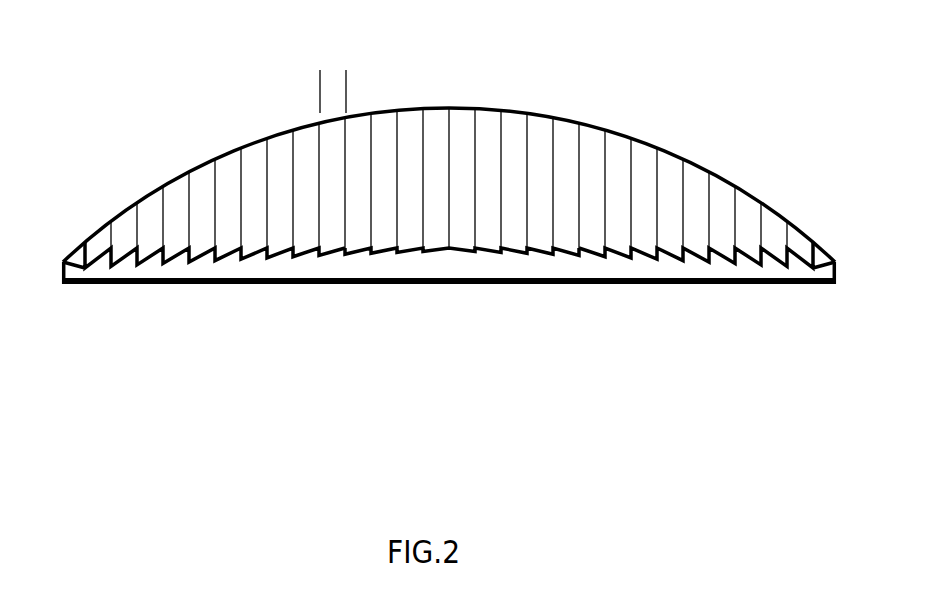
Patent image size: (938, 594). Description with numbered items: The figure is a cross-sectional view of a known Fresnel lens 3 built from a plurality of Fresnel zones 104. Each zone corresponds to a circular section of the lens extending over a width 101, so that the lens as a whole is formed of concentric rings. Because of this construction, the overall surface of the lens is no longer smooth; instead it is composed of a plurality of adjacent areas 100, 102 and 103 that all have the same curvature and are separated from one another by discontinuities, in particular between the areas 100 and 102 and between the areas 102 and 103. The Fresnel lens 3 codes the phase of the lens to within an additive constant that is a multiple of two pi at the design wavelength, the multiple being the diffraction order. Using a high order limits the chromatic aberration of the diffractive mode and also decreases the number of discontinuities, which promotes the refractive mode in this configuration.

The Fresnel lens 3 is at (117, 73).
The adjacent area 100 is at (208, 252).
The width 101 is at (252, 78).
The adjacent area 102 is at (483, 247).
The adjacent area 103 is at (672, 255).
The Fresnel zone 104 is at (778, 213).